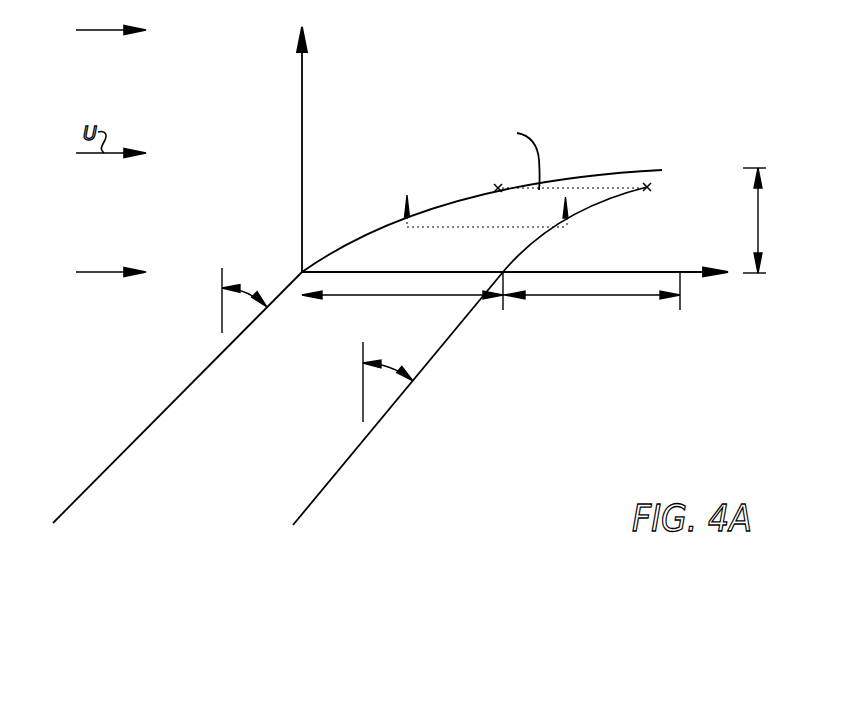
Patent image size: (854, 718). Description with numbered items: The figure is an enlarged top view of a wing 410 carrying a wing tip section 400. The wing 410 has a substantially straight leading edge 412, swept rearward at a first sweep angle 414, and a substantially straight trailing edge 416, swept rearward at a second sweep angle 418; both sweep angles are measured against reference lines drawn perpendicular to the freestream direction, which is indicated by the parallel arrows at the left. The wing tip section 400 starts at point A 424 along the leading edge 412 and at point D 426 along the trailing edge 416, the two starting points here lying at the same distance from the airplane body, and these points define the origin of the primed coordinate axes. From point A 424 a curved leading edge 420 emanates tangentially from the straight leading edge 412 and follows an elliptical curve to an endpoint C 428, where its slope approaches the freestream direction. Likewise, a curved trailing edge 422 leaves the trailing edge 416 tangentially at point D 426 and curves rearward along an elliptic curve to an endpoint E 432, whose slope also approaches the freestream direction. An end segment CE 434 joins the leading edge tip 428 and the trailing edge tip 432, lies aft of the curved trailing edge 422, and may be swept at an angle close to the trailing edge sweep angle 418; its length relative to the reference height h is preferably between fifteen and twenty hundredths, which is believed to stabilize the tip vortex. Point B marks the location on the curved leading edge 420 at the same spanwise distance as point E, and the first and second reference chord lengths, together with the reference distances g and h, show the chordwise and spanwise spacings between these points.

The wing tip section 400 is at (527, 76).
The wing 410 is at (497, 398).
The leading edge 412 is at (165, 410).
The leading edge sweep angle Λ1 414 is at (222, 280).
The trailing edge 416 is at (337, 460).
The trailing edge sweep angle Λ2 418 is at (363, 400).
The curved leading edge 420 is at (461, 197).
The curved trailing edge 422 is at (517, 254).
The point A 424 is at (307, 258).
The point D 426 is at (500, 268).
The point C 428 is at (662, 168).
The point E 432 is at (647, 193).
The end segment CE 434 is at (656, 178).